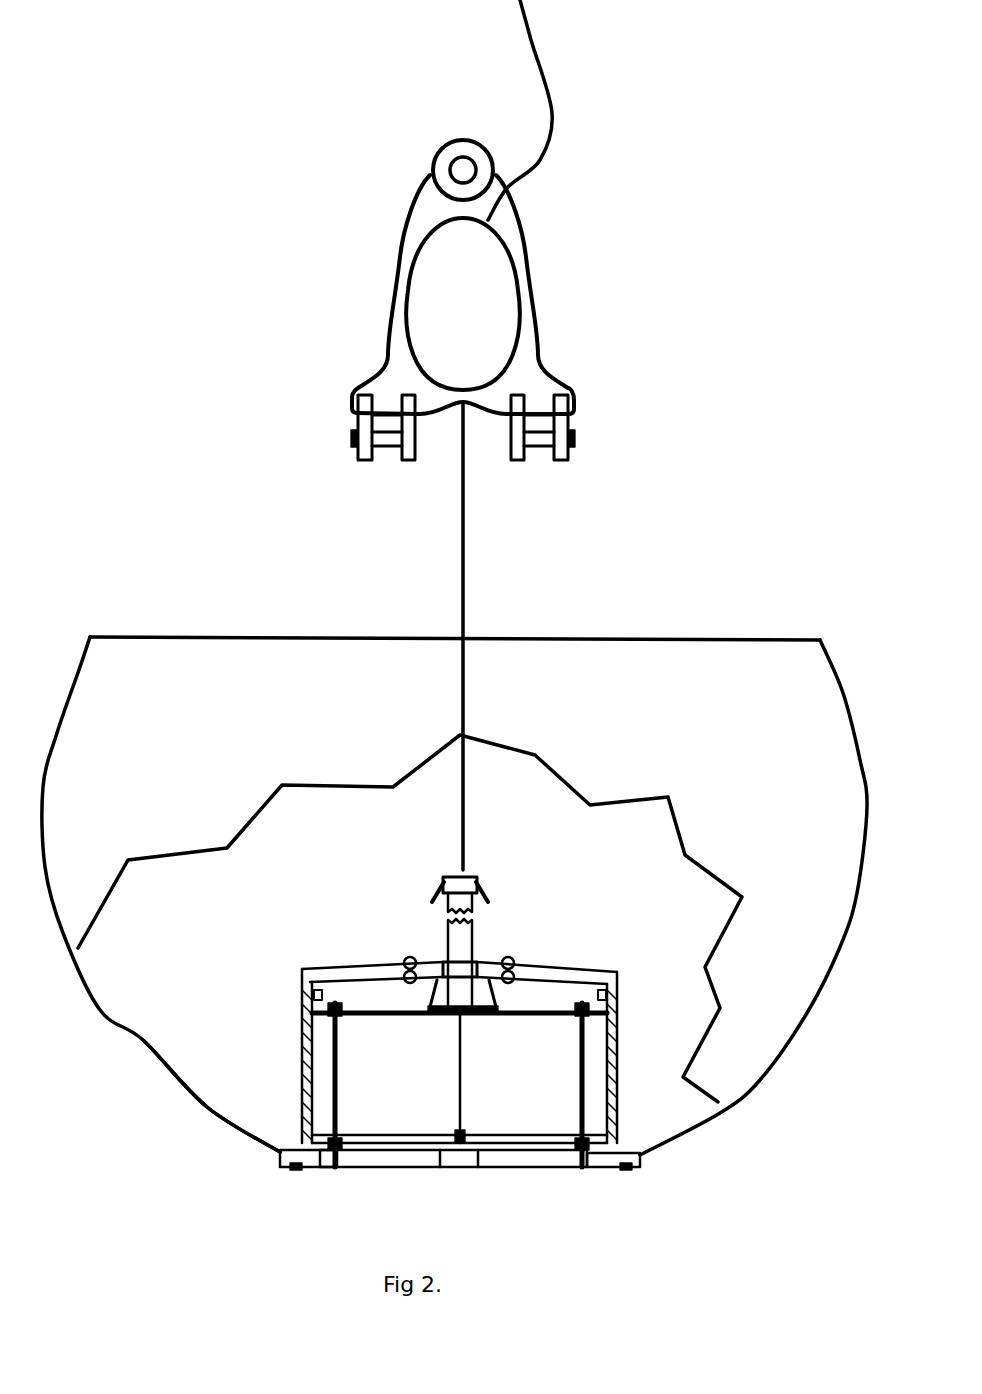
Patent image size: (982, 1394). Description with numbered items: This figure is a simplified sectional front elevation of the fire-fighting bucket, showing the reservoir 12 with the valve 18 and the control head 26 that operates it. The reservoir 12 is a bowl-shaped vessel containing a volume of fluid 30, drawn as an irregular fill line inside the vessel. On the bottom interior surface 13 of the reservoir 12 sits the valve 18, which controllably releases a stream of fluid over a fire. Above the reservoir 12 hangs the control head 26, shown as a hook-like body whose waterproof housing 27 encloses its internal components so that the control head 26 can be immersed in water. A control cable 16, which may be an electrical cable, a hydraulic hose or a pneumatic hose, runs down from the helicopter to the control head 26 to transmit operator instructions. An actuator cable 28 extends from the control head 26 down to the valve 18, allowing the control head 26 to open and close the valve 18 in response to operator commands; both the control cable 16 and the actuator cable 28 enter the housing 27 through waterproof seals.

The reservoir 12 is at (674, 635).
The bottom interior surface 13 is at (247, 1130).
The control cable 16 is at (537, 41).
The valve 18 is at (632, 1098).
The control head 26 is at (539, 206).
The waterproof housing 27 is at (489, 293).
The actuator cable 28 is at (467, 550).
The fluid 30 is at (250, 861).